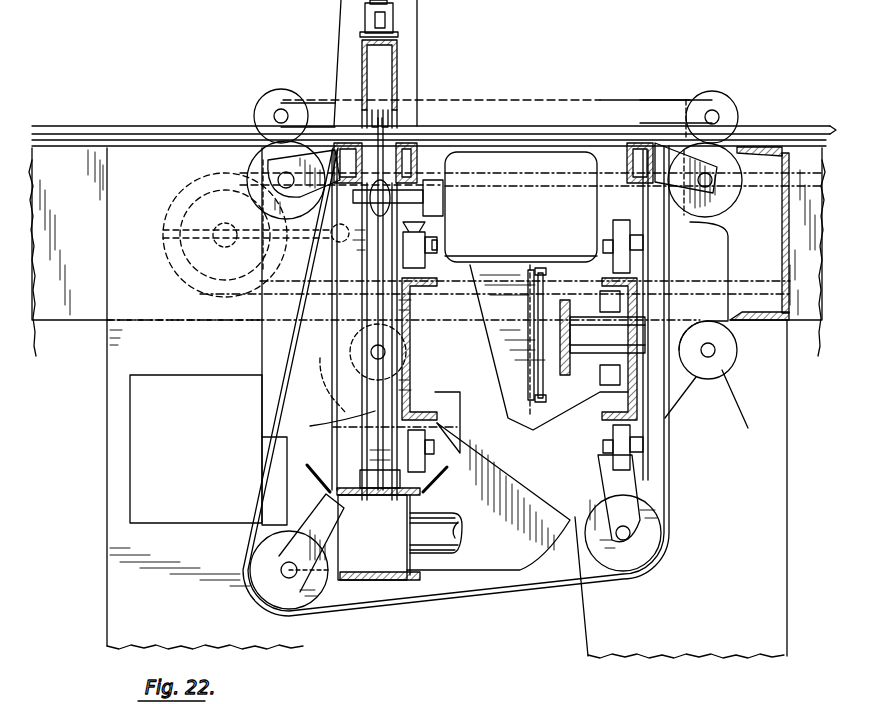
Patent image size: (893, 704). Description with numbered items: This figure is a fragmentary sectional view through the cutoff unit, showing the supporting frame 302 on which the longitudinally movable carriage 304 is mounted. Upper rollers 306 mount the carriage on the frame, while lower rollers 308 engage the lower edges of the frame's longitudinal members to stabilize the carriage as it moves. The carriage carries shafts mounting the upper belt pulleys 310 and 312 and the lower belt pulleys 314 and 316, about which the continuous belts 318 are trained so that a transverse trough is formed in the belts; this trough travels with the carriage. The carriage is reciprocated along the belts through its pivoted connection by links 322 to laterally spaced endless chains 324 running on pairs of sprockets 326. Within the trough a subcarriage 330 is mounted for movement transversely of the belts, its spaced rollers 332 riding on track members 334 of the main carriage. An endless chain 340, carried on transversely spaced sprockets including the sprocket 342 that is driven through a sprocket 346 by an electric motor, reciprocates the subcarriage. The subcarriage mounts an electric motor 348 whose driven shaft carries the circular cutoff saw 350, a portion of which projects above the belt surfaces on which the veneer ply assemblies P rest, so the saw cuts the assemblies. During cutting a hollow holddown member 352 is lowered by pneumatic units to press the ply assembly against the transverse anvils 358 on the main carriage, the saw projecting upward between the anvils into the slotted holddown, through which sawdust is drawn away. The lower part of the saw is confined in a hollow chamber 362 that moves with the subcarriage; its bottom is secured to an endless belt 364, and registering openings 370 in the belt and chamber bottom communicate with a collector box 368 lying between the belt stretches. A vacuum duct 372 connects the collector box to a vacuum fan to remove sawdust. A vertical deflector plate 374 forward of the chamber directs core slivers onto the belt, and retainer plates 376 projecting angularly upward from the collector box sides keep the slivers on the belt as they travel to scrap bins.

The veneer ply assemblies P is at (810, 127).
The supporting frame 302 is at (105, 585).
The carriage 304 is at (705, 407).
The upper rollers 306 is at (258, 100).
The lower rollers 308 is at (738, 354).
The upper belt pulley 310 is at (257, 170).
The upper belt pulley 312 is at (737, 198).
The lower belt pulley 314 is at (268, 590).
The lower belt pulley 316 is at (632, 562).
The continuous belts 318 is at (822, 142).
The links 322 is at (485, 242).
The endless chains 324 is at (176, 263).
The sprockets 326 is at (176, 208).
The subcarriage 330 is at (650, 268).
The rollers 332 is at (438, 247).
The track members 334 is at (409, 323).
The endless chain 340 is at (531, 270).
The sprocket 342 is at (543, 290).
The sprocket 346 is at (572, 366).
The electric motor 348 is at (540, 210).
The circular cutoff saw 350 is at (396, 295).
The holddown member 352 is at (397, 57).
The anvils 358 is at (398, 136).
The hollow chamber 362 is at (332, 423).
The endless belt 364 is at (357, 497).
The collector box 368 is at (345, 559).
The registering openings 370 is at (380, 501).
The vacuum duct 372 is at (462, 526).
The deflector plate 374 is at (340, 383).
The retainer plates 376 is at (318, 483).